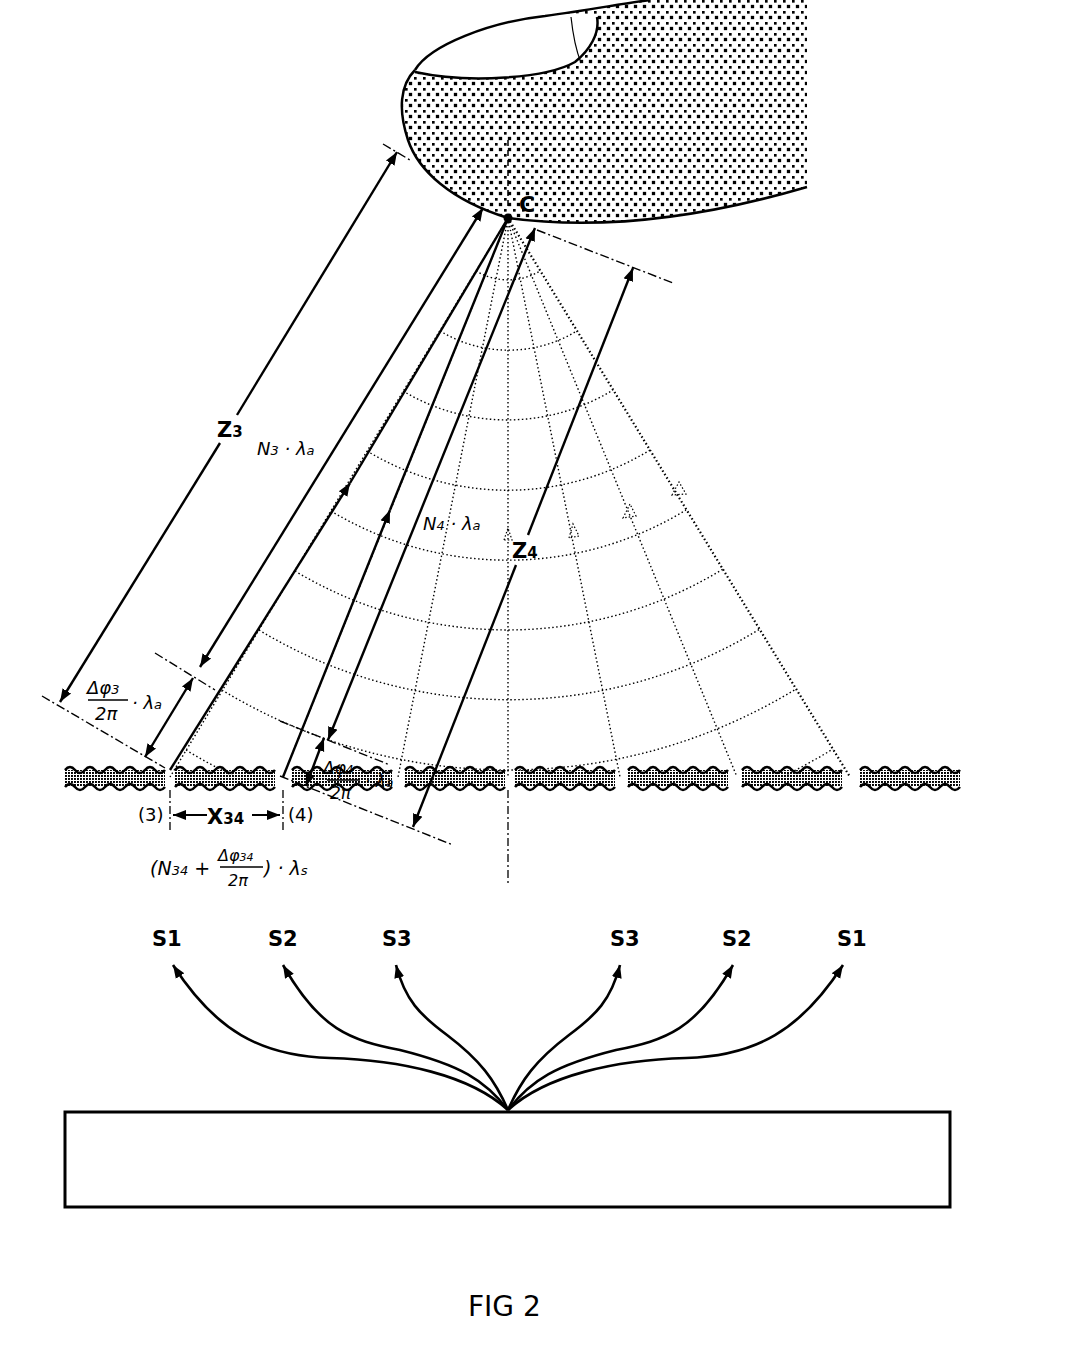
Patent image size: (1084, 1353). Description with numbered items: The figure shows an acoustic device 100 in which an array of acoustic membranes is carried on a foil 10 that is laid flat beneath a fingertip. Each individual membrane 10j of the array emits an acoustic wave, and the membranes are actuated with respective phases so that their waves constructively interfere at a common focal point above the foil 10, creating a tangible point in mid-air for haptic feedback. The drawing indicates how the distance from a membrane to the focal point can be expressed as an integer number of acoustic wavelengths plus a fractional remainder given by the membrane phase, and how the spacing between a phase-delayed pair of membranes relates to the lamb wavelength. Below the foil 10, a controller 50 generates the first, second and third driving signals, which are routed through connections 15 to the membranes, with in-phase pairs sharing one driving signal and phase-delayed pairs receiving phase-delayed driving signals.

The acoustic device 100 is at (146, 391).
The foil 10 is at (868, 710).
The sensor element 10j is at (280, 778).
The sensor signals 15 is at (492, 1081).
The controller 50 is at (507, 1159).